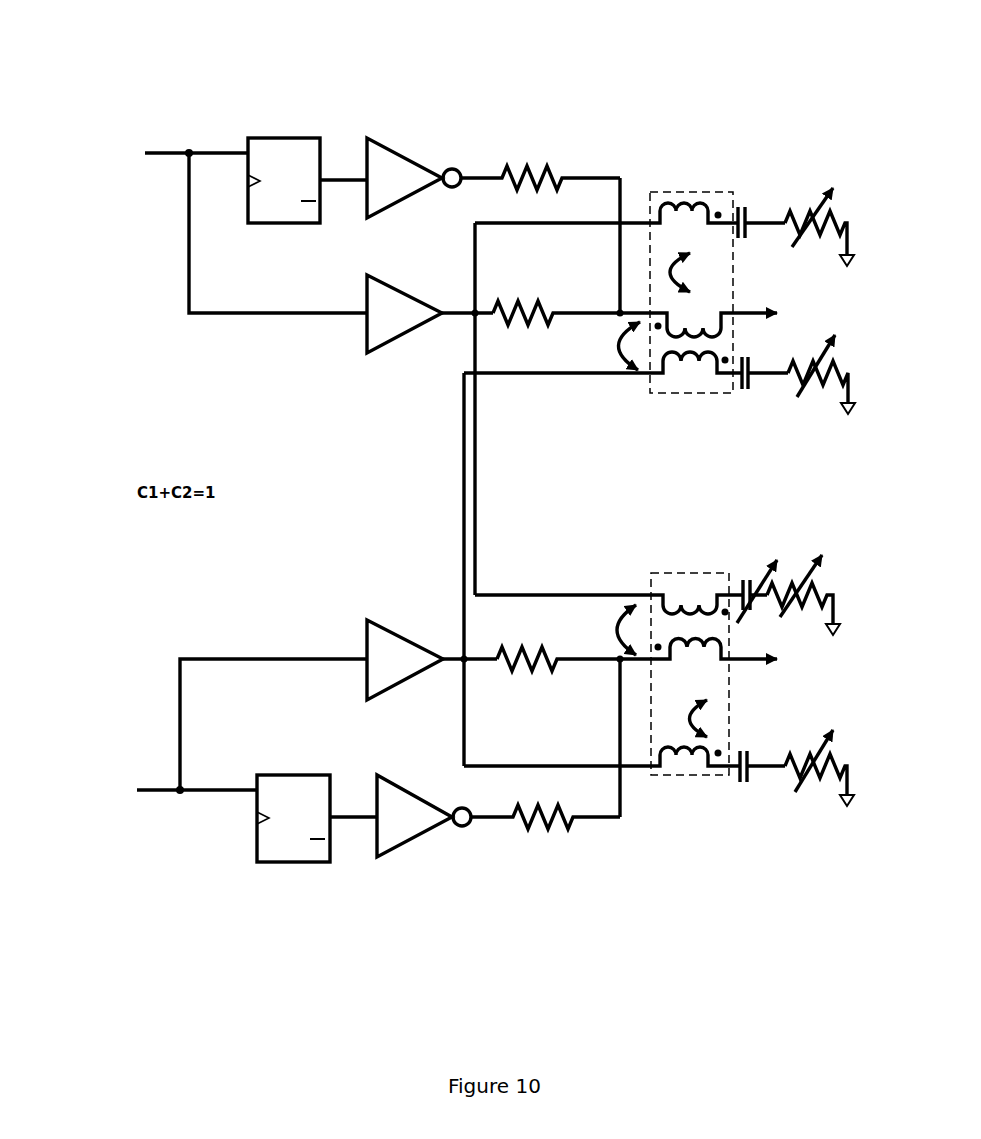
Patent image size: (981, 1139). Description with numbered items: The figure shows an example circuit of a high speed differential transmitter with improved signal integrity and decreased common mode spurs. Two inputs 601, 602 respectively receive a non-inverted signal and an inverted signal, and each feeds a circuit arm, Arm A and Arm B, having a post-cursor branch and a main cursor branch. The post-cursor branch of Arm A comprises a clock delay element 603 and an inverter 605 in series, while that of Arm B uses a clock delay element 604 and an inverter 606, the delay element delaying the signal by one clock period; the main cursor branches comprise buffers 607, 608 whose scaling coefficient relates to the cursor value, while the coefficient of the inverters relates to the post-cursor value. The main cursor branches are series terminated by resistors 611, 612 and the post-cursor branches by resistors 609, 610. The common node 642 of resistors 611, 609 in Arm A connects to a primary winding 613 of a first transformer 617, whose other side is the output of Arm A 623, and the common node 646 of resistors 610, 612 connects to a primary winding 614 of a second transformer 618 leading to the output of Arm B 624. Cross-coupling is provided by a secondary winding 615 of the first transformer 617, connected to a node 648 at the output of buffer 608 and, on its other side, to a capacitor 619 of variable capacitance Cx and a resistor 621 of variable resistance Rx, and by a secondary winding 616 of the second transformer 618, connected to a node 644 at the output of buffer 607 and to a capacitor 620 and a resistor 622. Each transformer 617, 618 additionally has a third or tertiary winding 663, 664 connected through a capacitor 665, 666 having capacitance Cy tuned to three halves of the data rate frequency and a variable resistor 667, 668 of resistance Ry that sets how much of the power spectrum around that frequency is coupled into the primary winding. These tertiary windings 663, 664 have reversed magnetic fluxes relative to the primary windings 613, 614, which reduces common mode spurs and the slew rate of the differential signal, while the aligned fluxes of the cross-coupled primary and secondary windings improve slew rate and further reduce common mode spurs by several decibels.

The input 601 is at (128, 128).
The input 602 is at (135, 852).
The clock delay element 603 is at (283, 130).
The clock delay element 604 is at (292, 875).
The inverter 605 is at (402, 142).
The inverter 606 is at (430, 857).
The buffer 607 is at (388, 366).
The buffer 608 is at (388, 618).
The resistor 609 is at (520, 160).
The resistor 610 is at (545, 850).
The resistor 611 is at (530, 300).
The resistor 612 is at (530, 680).
The primary winding 613 is at (683, 305).
The primary winding 614 is at (680, 665).
The secondary winding 615 is at (690, 403).
The secondary winding 616 is at (690, 565).
The first transformer 617 is at (650, 393).
The second transformer 618 is at (650, 573).
The capacitor 619 is at (748, 402).
The capacitor 620 is at (748, 568).
The resistor 621 is at (830, 400).
The resistor 622 is at (805, 545).
The output of Arm A 623 is at (790, 280).
The output of Arm B 624 is at (800, 700).
The common node 642 is at (628, 318).
The node 644 is at (472, 308).
The common node 646 is at (620, 665).
The node 648 is at (465, 663).
The third winding 663 is at (690, 190).
The third winding 664 is at (688, 800).
The capacitor 665 is at (760, 182).
The capacitor 666 is at (745, 800).
The resistor 667 is at (845, 160).
The resistor 668 is at (810, 800).